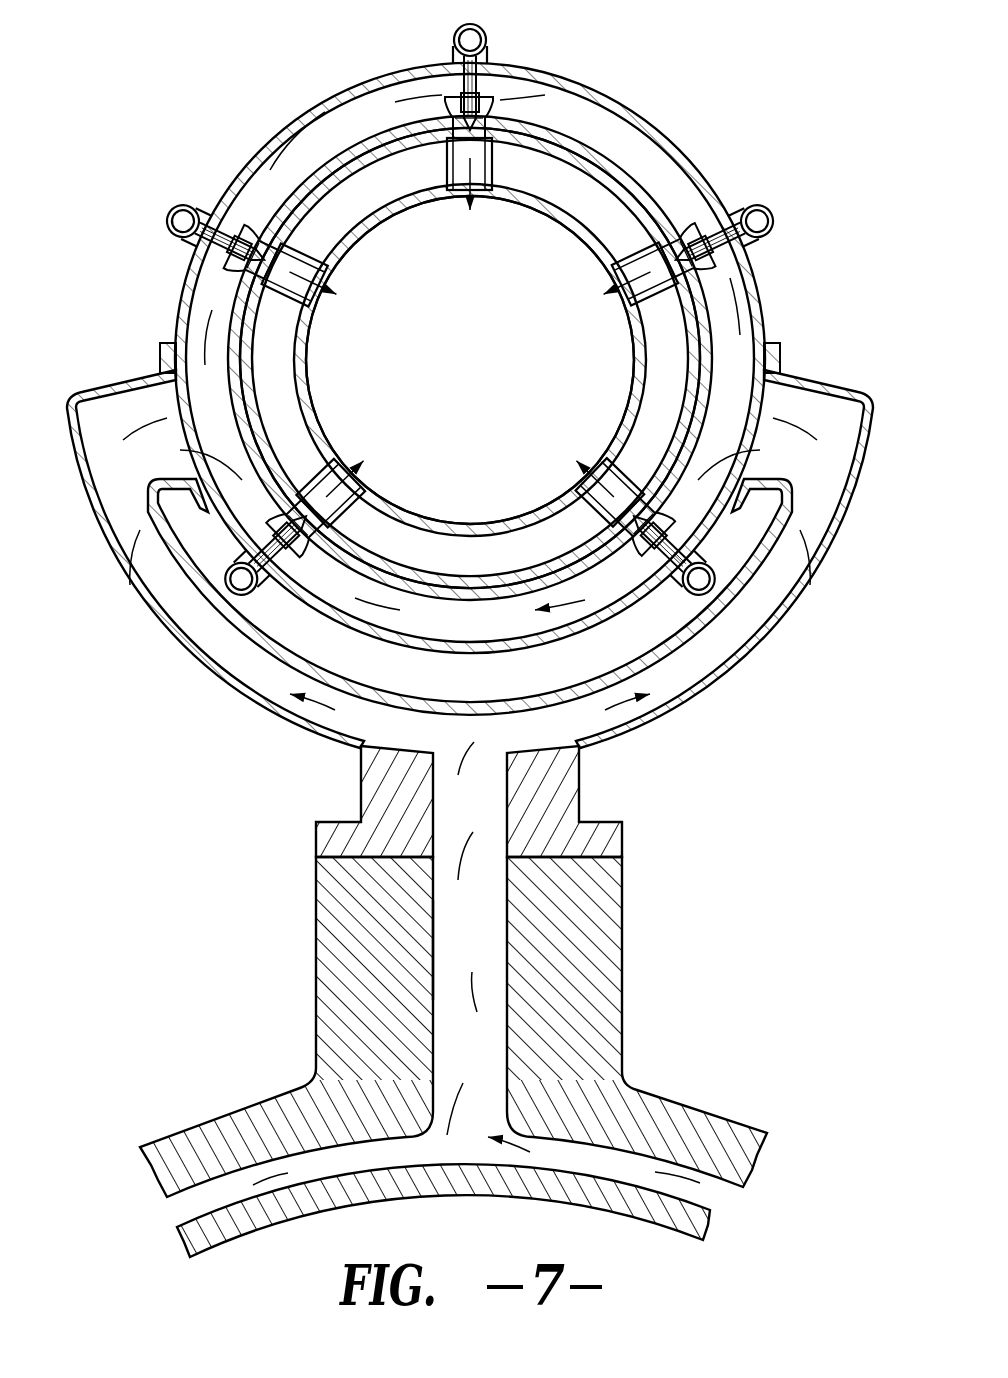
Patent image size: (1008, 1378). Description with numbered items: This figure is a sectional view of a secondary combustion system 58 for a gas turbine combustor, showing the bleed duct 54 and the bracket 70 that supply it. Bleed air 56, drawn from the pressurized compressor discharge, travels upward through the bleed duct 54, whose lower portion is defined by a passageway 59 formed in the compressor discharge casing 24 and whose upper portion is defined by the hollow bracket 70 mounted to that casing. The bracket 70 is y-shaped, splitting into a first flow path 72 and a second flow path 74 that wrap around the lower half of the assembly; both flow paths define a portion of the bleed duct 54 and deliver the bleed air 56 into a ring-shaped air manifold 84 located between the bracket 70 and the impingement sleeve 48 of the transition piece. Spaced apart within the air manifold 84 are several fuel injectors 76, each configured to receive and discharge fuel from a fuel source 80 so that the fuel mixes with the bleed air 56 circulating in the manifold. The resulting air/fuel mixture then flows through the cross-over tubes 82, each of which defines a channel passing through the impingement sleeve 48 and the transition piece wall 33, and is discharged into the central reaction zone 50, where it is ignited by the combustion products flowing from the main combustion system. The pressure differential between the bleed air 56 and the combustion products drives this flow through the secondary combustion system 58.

The compressor discharge casing 24 is at (397, 1000).
The transition piece wall 33 is at (378, 222).
The impingement sleeve 48 is at (362, 168).
The reaction zone 50 is at (490, 369).
The bleed duct 54 is at (493, 820).
The bleed air 56 is at (363, 590).
The secondary combustion system 58 is at (205, 75).
The passageway 59 is at (440, 926).
The bracket 70 is at (412, 840).
The first flow path 72 is at (115, 500).
The second flow path 74 is at (825, 500).
The fuel injectors 76 is at (476, 84).
The fuel source 80 is at (461, 34).
The cross-over tubes 82 is at (642, 332).
The air manifold 84 is at (617, 141).